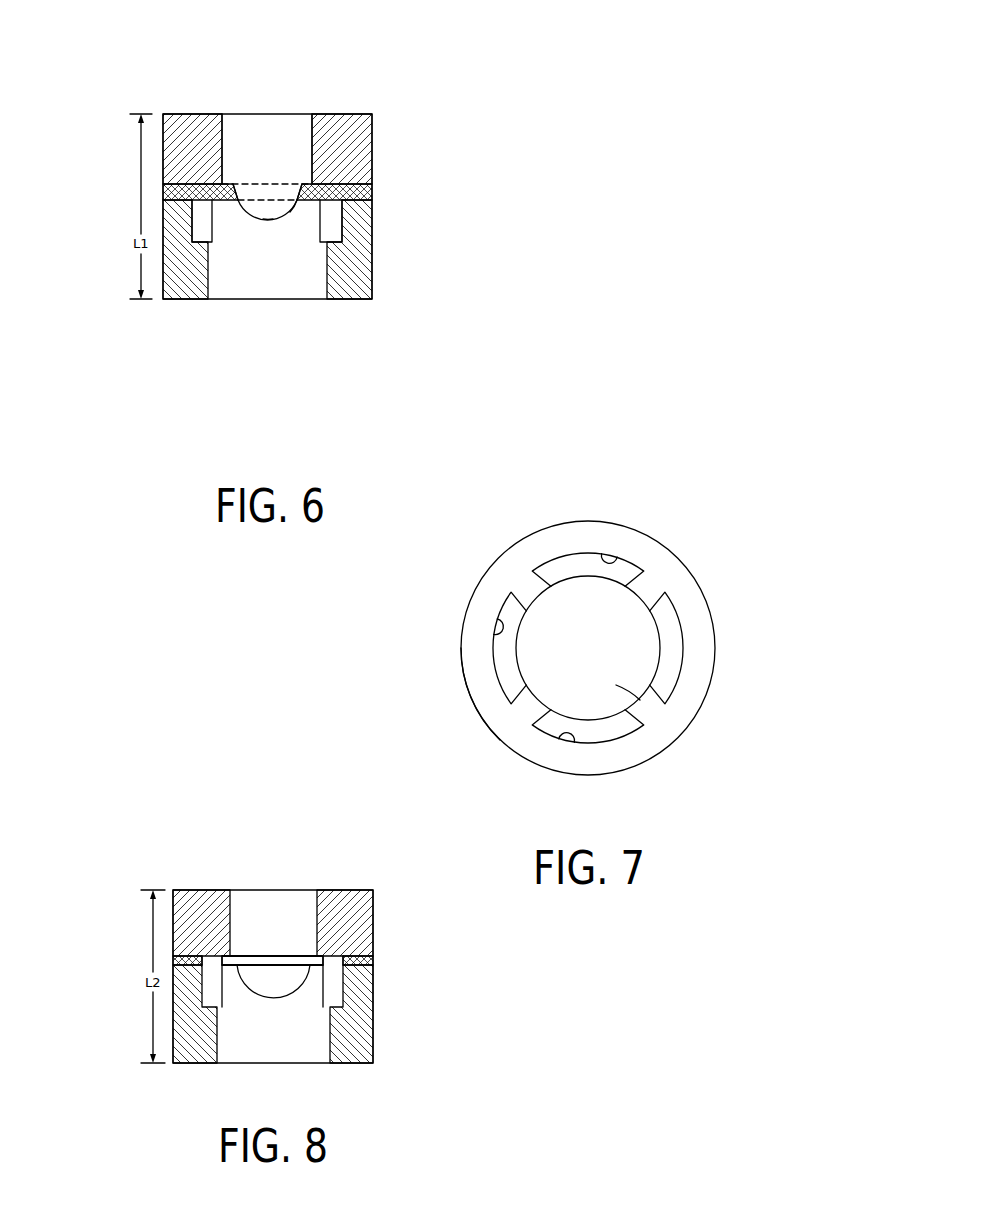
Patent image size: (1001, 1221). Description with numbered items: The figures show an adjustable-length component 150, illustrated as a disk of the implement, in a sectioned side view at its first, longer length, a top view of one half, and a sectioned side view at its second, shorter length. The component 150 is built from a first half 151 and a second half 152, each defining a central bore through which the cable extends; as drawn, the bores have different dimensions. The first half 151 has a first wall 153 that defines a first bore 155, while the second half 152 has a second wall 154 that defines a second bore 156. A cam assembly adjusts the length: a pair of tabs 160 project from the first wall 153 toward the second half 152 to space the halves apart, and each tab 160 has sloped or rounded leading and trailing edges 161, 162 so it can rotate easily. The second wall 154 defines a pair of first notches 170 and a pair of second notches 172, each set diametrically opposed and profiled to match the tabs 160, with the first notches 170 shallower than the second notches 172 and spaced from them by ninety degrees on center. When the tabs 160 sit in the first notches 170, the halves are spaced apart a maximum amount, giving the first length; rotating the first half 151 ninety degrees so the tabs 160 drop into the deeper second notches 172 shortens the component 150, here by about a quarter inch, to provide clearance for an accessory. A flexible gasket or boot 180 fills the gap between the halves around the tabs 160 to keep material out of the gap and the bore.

In FIG. 6, the component 150 is at (94, 65).
In FIG. 7, the component 150 is at (460, 497).
In FIG. 8, the component 150 is at (106, 811).
In FIG. 6, the first half 151 is at (196, 114).
In FIG. 8, the first half 151 is at (193, 890).
In FIG. 6, the second half 152 is at (183, 300).
In FIG. 7, the second half 152 is at (471, 694).
In FIG. 8, the second half 152 is at (350, 1037).
In FIG. 6, the first wall 153 is at (170, 114).
In FIG. 7, the second wall 154 is at (494, 595).
In FIG. 6, the first bore 155 is at (300, 114).
In FIG. 7, the second bore 156 is at (630, 695).
In FIG. 6, the tabs 160 is at (293, 217).
In FIG. 6, the leading edge 161 is at (238, 217).
In FIG. 6, the trailing edge 162 is at (300, 212).
In FIG. 6, the first notches 170 is at (268, 214).
In FIG. 7, the first notches 170 is at (610, 556).
In FIG. 6, the second notches 172 is at (192, 222).
In FIG. 7, the second notches 172 is at (500, 630).
In FIG. 6, the flexible gasket or boot 180 is at (372, 193).
In FIG. 8, the flexible gasket or boot 180 is at (373, 960).